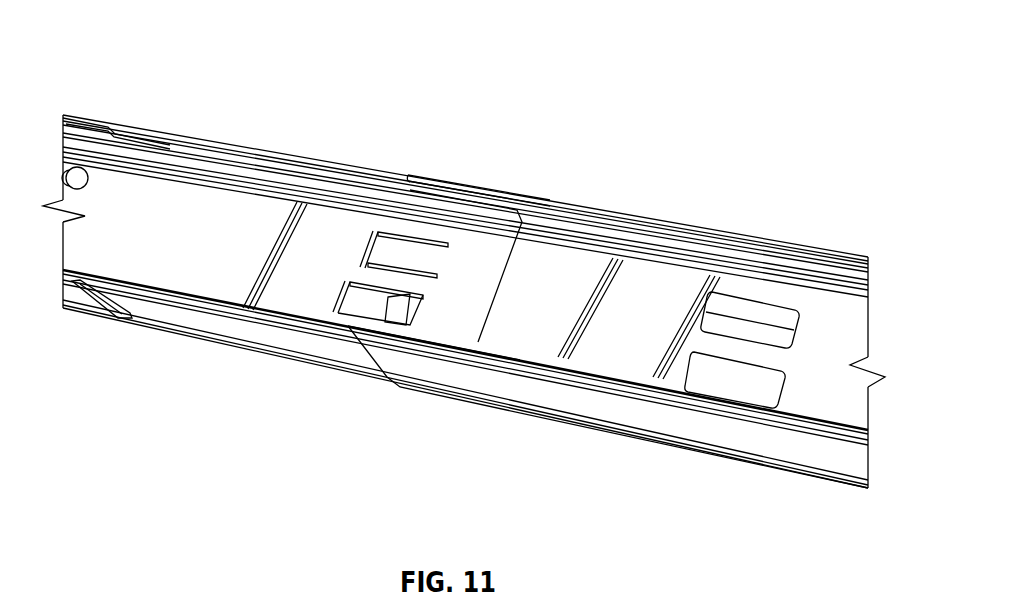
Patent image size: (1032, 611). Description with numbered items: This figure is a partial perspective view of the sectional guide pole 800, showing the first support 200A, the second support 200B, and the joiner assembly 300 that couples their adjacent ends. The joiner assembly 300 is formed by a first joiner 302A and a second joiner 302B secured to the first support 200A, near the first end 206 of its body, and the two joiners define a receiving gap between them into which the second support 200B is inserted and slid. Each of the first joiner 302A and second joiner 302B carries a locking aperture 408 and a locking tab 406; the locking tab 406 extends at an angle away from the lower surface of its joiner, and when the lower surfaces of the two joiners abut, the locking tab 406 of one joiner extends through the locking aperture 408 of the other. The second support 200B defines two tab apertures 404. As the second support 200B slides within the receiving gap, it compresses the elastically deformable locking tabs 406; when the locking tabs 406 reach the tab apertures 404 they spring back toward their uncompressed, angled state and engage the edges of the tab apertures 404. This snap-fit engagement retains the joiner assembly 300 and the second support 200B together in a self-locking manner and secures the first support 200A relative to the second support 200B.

The sectional guide pole 800 is at (770, 68).
The first support 200A is at (68, 113).
The second support 200B is at (640, 424).
The joiner assembly 300 is at (395, 81).
The first joiner 302A is at (268, 172).
The second joiner 302B is at (325, 358).
The locking tab 406 is at (388, 325).
The locking aperture 408 is at (397, 247).
The first end 206 is at (397, 297).
The tab aperture 404 is at (800, 318).